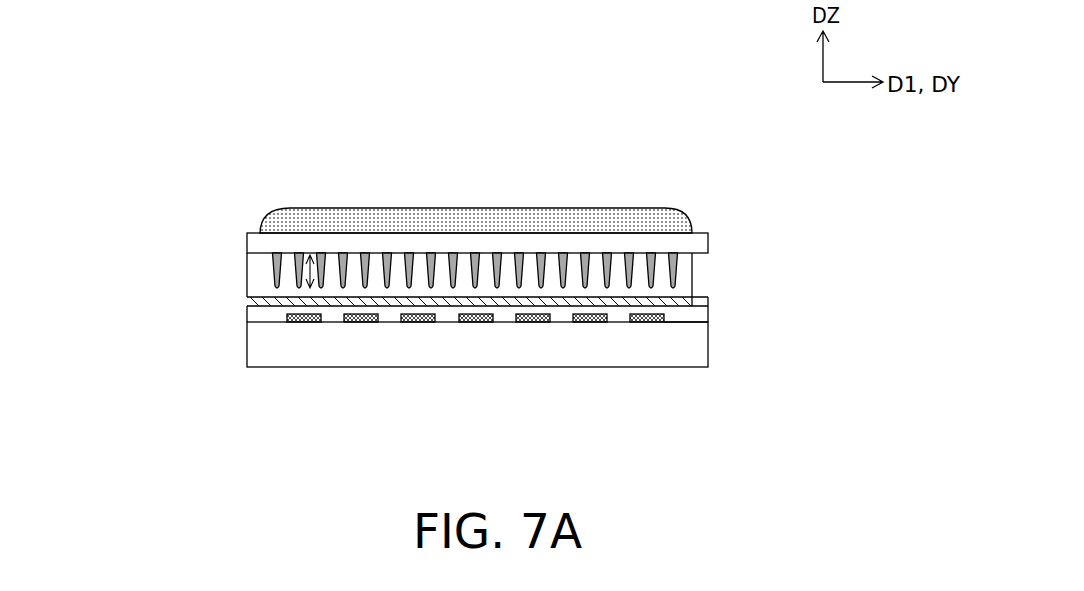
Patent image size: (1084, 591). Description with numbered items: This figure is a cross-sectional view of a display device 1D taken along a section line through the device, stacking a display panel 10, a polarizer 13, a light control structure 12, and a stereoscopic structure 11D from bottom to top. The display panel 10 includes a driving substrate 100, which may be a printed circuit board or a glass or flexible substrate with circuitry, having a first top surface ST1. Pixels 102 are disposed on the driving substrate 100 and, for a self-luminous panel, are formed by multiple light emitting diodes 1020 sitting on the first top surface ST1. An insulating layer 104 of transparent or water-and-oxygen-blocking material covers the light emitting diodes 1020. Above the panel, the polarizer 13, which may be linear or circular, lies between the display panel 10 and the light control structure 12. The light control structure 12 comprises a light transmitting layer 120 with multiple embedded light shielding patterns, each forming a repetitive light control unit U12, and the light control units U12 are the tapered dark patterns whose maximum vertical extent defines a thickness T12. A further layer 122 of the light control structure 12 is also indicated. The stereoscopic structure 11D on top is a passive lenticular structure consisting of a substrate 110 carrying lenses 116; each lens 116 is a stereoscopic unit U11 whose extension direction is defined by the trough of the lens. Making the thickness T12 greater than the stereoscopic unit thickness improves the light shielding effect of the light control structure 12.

The display device 1D is at (843, 440).
The display panel 10 is at (110, 143).
The driving substrate 100 is at (740, 355).
The pixels 102 is at (444, 306).
The light emitting diodes 1020 is at (644, 323).
The insulating layer 104 is at (740, 292).
The stereoscopic structure 11D is at (110, 245).
The substrate 110 is at (738, 245).
The lenses 116 is at (666, 183).
The stereoscopic unit U11 is at (476, 221).
The light control structure 12 is at (110, 337).
The light transmitting layer 120 is at (270, 265).
The filling layer 122 is at (403, 329).
The polarizer 13 is at (252, 300).
The light control unit U12 is at (276, 279).
The thickness of light control unit T12 is at (316, 280).
The first top surface ST1 is at (700, 321).